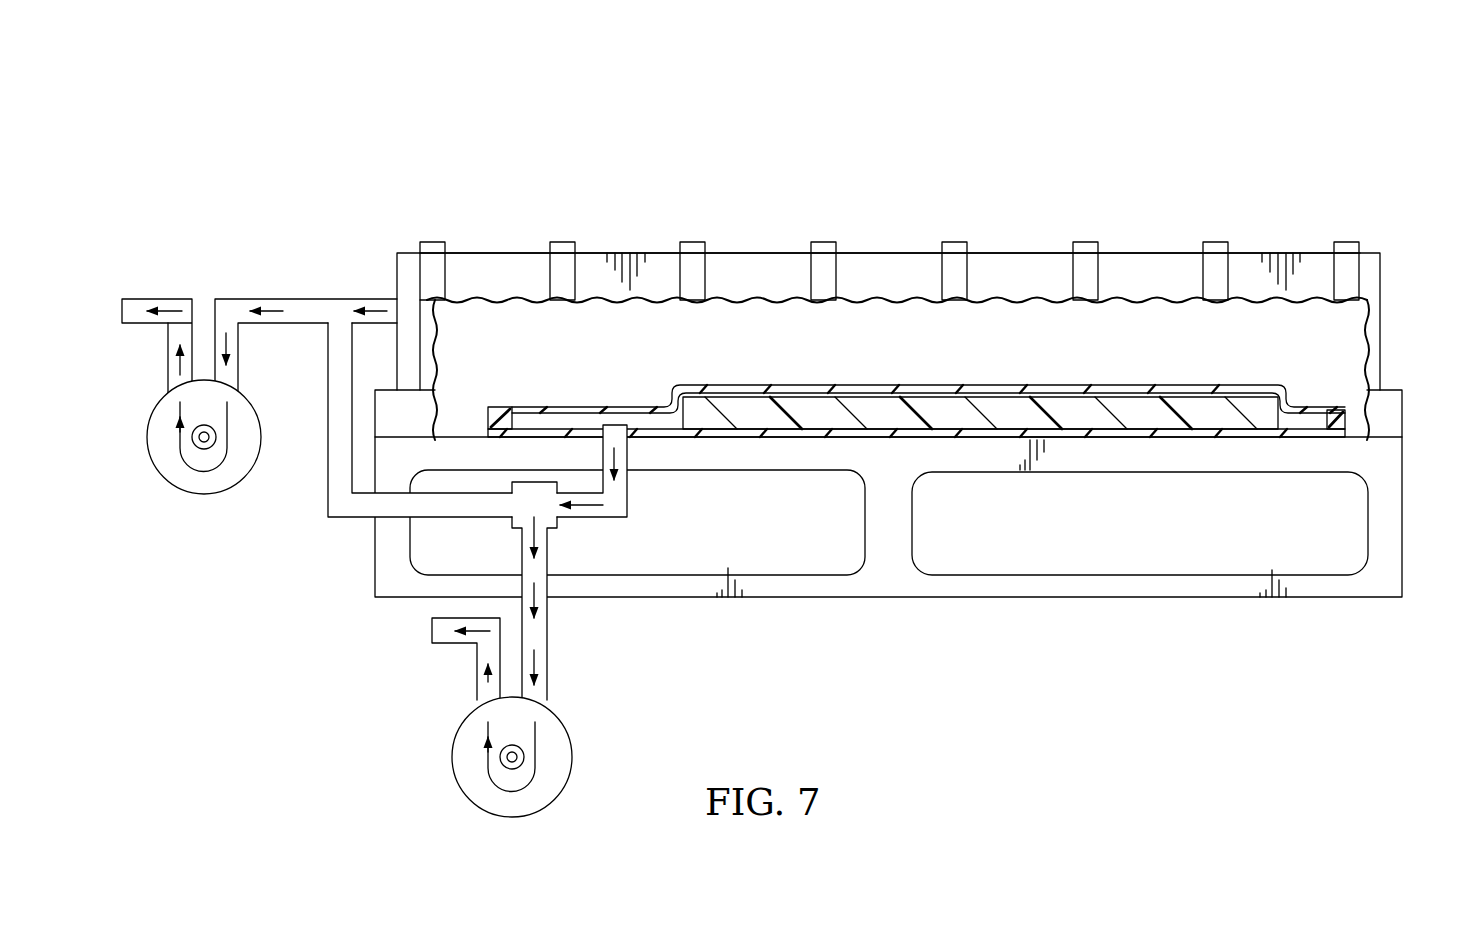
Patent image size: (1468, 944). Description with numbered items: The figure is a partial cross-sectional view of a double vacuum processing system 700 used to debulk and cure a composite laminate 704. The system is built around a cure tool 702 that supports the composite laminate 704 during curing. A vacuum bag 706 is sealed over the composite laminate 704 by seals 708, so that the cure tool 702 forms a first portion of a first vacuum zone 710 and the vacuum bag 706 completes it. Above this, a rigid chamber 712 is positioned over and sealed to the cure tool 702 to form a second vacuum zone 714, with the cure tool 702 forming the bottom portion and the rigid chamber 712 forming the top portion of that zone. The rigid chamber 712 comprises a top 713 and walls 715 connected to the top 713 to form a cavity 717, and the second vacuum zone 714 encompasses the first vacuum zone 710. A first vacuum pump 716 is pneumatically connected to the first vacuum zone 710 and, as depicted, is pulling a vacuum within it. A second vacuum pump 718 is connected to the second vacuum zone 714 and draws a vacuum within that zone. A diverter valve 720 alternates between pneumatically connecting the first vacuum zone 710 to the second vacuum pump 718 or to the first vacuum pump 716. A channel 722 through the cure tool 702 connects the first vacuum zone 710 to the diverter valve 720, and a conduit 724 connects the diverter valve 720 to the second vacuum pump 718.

The double vacuum processing system 700 is at (497, 148).
The cure tool 702 is at (969, 603).
The composite laminate 704 is at (1073, 410).
The vacuum bag 706 is at (1010, 385).
The seals 708 is at (488, 422).
The first vacuum zone 710 is at (660, 422).
The rigid chamber 712 is at (1141, 250).
The top 713 is at (877, 253).
The second vacuum zone 714 is at (786, 328).
The walls 715 is at (1382, 300).
The first vacuum pump 716 is at (428, 757).
The cavity 717 is at (888, 323).
The second vacuum pump 718 is at (144, 494).
The diverter valve 720 is at (557, 528).
The channel 722 is at (627, 493).
The conduit 724 is at (328, 355).